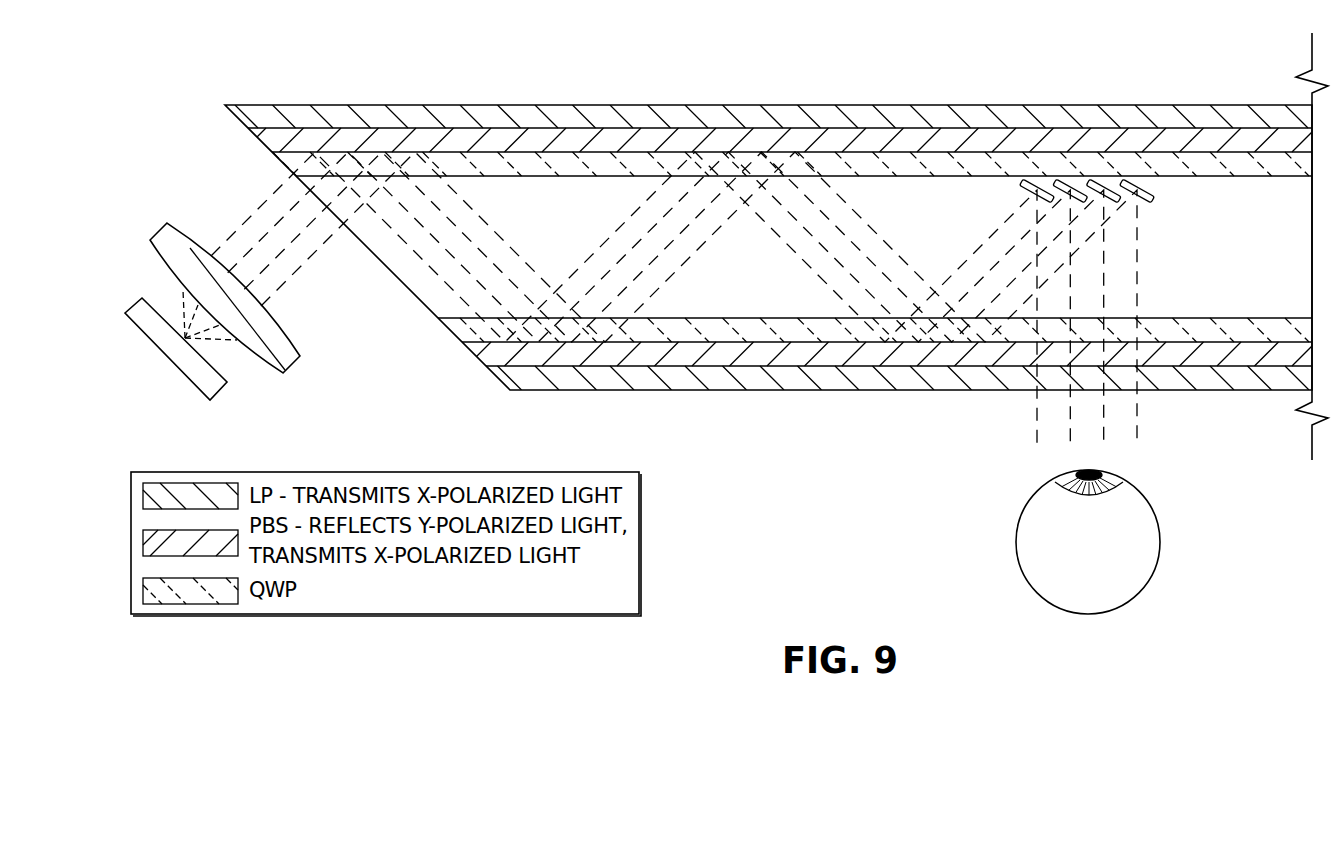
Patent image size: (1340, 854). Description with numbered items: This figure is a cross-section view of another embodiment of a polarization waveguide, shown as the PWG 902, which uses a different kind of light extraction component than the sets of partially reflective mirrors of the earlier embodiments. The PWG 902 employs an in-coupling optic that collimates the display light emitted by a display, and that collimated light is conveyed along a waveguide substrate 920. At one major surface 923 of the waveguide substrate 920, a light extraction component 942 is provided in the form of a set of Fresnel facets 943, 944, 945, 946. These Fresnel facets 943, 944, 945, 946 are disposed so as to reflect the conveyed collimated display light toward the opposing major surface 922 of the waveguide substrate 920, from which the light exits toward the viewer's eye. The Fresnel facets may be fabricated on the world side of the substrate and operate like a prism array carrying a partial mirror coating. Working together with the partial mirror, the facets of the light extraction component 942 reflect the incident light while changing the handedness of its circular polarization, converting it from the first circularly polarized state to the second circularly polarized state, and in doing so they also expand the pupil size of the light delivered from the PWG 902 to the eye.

The PWG 902 is at (940, 87).
The waveguide substrate 920 is at (722, 298).
The opposing major surface 922 is at (1234, 318).
The major surface 923 is at (562, 178).
The light extraction component 942 is at (1214, 199).
The Fresnel facet 943 is at (1022, 188).
The Fresnel facet 944 is at (1077, 182).
The Fresnel facet 945 is at (1107, 184).
The Fresnel facet 946 is at (1152, 204).